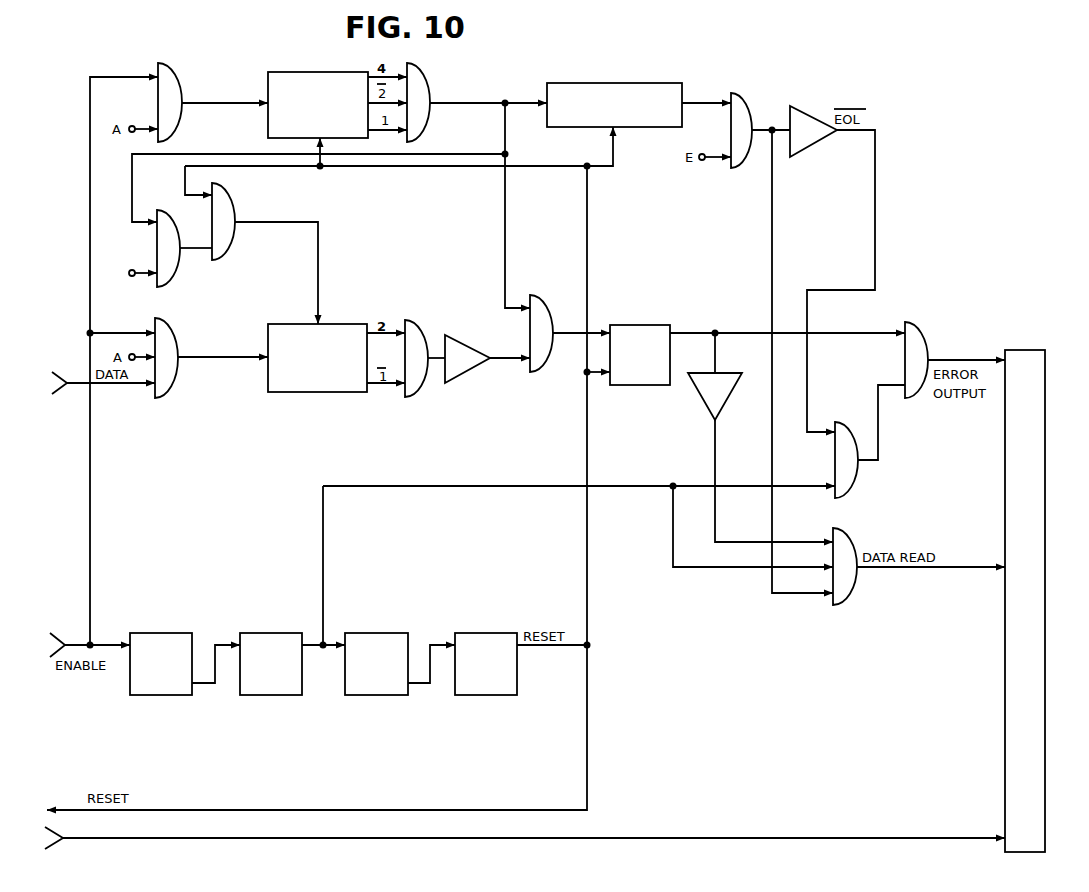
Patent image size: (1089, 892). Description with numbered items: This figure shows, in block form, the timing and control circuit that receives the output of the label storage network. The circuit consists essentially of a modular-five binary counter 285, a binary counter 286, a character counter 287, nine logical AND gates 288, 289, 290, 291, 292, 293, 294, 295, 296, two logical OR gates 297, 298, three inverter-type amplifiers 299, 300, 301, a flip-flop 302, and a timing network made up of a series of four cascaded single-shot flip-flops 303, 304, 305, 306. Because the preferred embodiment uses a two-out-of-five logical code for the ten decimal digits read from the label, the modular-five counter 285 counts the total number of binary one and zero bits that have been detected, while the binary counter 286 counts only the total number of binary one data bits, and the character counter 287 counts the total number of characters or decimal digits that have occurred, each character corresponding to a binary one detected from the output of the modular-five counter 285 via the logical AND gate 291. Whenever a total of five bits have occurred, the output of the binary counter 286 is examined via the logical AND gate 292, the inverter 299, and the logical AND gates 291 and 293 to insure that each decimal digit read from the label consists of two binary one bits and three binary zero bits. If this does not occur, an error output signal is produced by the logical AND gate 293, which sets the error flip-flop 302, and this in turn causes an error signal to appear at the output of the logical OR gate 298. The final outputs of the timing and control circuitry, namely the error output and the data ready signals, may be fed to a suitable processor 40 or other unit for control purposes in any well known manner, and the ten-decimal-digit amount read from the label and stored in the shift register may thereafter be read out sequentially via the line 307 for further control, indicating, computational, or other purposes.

The processor 40 is at (1018, 350).
The modular-5 binary counter 285 is at (303, 72).
The binary counter 286 is at (297, 324).
The character counter 287 is at (580, 83).
The logical AND gate 288 is at (178, 88).
The logical AND gate 289 is at (176, 216).
The logical AND gate 290 is at (170, 332).
The logical AND gate 291 is at (427, 90).
The logical AND gate 292 is at (418, 326).
The logical AND gate 293 is at (543, 305).
The logical AND gate 294 is at (748, 108).
The logical AND gate 295 is at (865, 402).
The logical AND gate 296 is at (845, 532).
The logical OR gate 297 is at (227, 202).
The logical OR gate 298 is at (918, 330).
The inverter-type amplifier 299 is at (462, 342).
The inverter-type amplifier 300 is at (702, 394).
The inverter-type amplifier 301 is at (812, 110).
The error flip-flop 302 is at (646, 325).
The single-shot flip-flop 303 is at (160, 633).
The single-shot flip-flop 304 is at (262, 633).
The single-shot flip-flop 305 is at (372, 633).
The single-shot flip-flop 306 is at (477, 633).
The line 307 is at (641, 838).